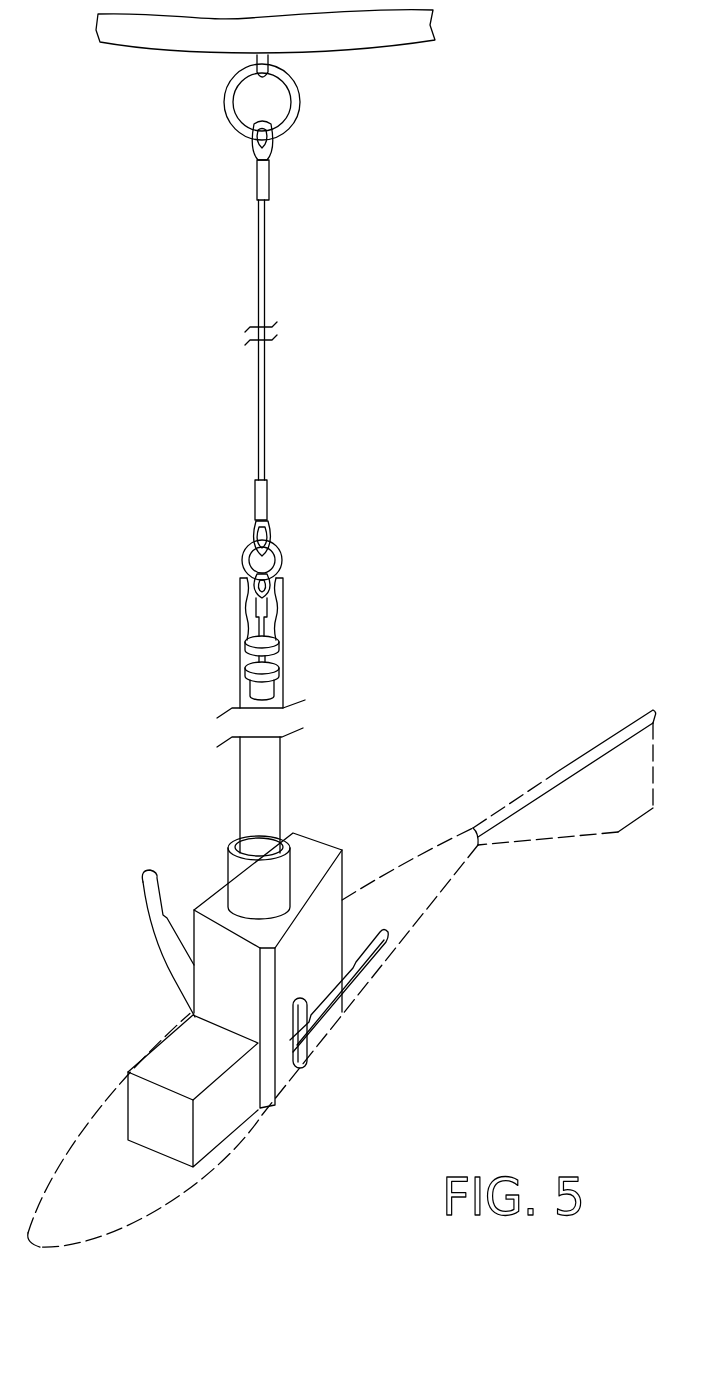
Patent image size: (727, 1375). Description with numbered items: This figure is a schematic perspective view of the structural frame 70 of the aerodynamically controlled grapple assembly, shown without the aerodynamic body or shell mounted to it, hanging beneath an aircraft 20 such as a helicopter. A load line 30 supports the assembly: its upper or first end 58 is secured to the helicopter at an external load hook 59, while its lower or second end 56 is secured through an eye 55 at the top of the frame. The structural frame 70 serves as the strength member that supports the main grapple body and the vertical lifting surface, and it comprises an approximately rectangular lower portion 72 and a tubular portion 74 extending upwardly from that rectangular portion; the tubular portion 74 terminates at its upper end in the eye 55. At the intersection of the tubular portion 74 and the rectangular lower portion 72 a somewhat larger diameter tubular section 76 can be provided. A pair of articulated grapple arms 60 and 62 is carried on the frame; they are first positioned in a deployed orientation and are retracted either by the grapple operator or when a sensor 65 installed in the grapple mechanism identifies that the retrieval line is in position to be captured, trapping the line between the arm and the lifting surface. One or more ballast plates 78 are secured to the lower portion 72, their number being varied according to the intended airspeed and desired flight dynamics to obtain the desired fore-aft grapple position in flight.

The aircraft 20 is at (355, 35).
The external load hook 59 is at (227, 95).
The first end of the load line 58 is at (258, 178).
The load line 30 is at (258, 265).
The second end of the load line 56 is at (263, 498).
The eye 55 is at (255, 538).
The tubular portion 74 is at (238, 688).
The structural frame 70 is at (214, 789).
The larger diameter tubular section 76 is at (240, 875).
The lower portion 72 is at (330, 895).
The sensor 65 is at (298, 1008).
The grapple arm 62 is at (163, 937).
The grapple arm 60 is at (342, 990).
The ballast plates 78 is at (212, 1130).